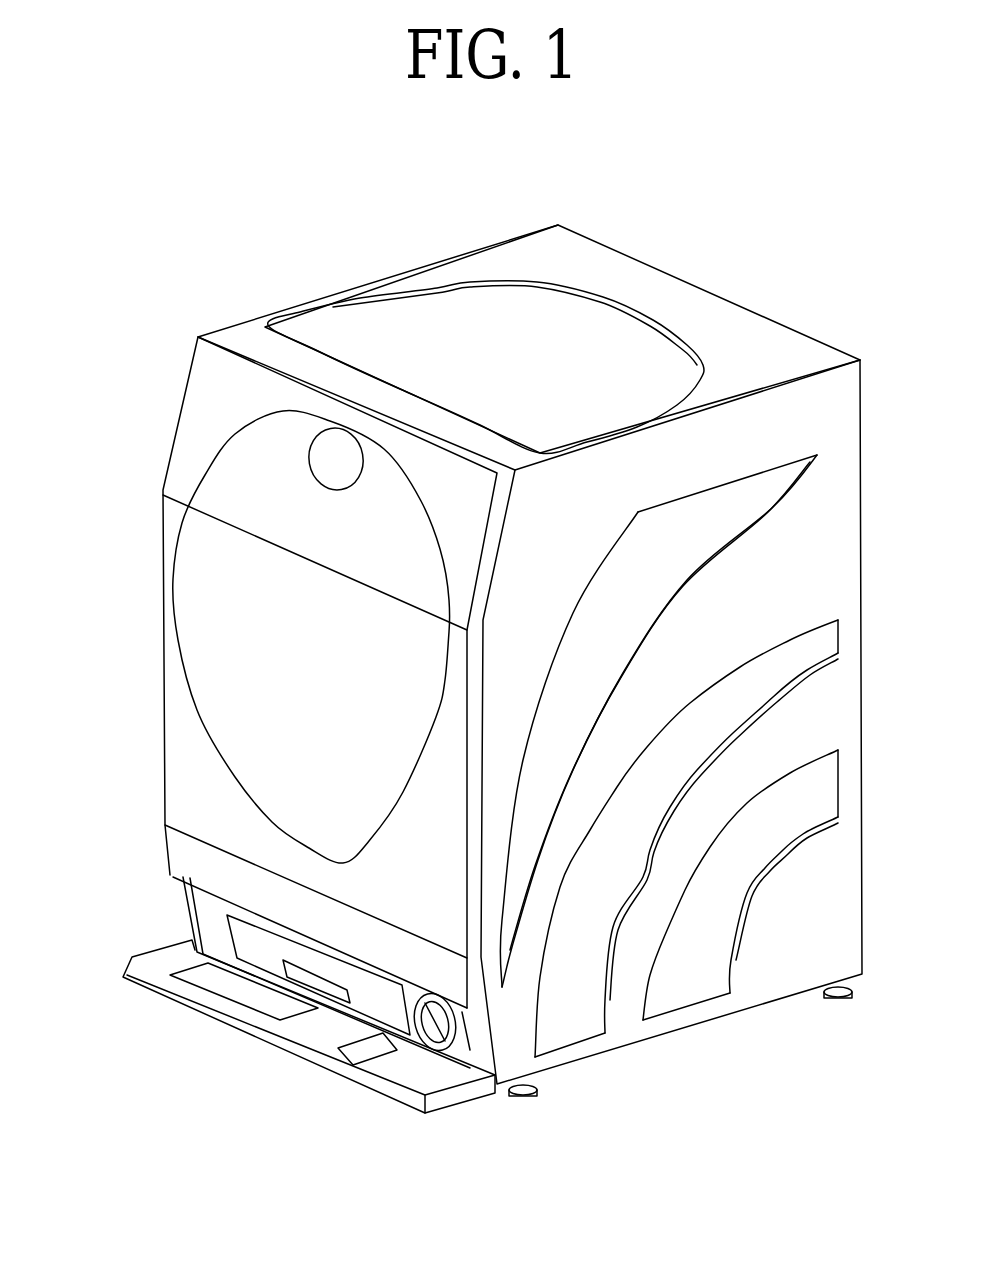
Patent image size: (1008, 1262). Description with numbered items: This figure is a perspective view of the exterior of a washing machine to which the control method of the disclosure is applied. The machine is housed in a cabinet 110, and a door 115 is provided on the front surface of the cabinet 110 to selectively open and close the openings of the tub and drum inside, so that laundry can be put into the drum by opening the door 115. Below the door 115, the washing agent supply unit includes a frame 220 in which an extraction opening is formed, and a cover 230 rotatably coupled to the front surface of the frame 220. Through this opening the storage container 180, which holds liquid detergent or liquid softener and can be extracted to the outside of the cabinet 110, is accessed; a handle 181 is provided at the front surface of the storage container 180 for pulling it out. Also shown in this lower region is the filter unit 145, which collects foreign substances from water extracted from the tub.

The cabinet 110 is at (541, 247).
The door 115 is at (208, 630).
The frame 220 is at (205, 907).
The cover 230 is at (147, 990).
The storage container 180 is at (270, 957).
The handle 181 is at (330, 990).
The filter unit 145 is at (427, 1028).